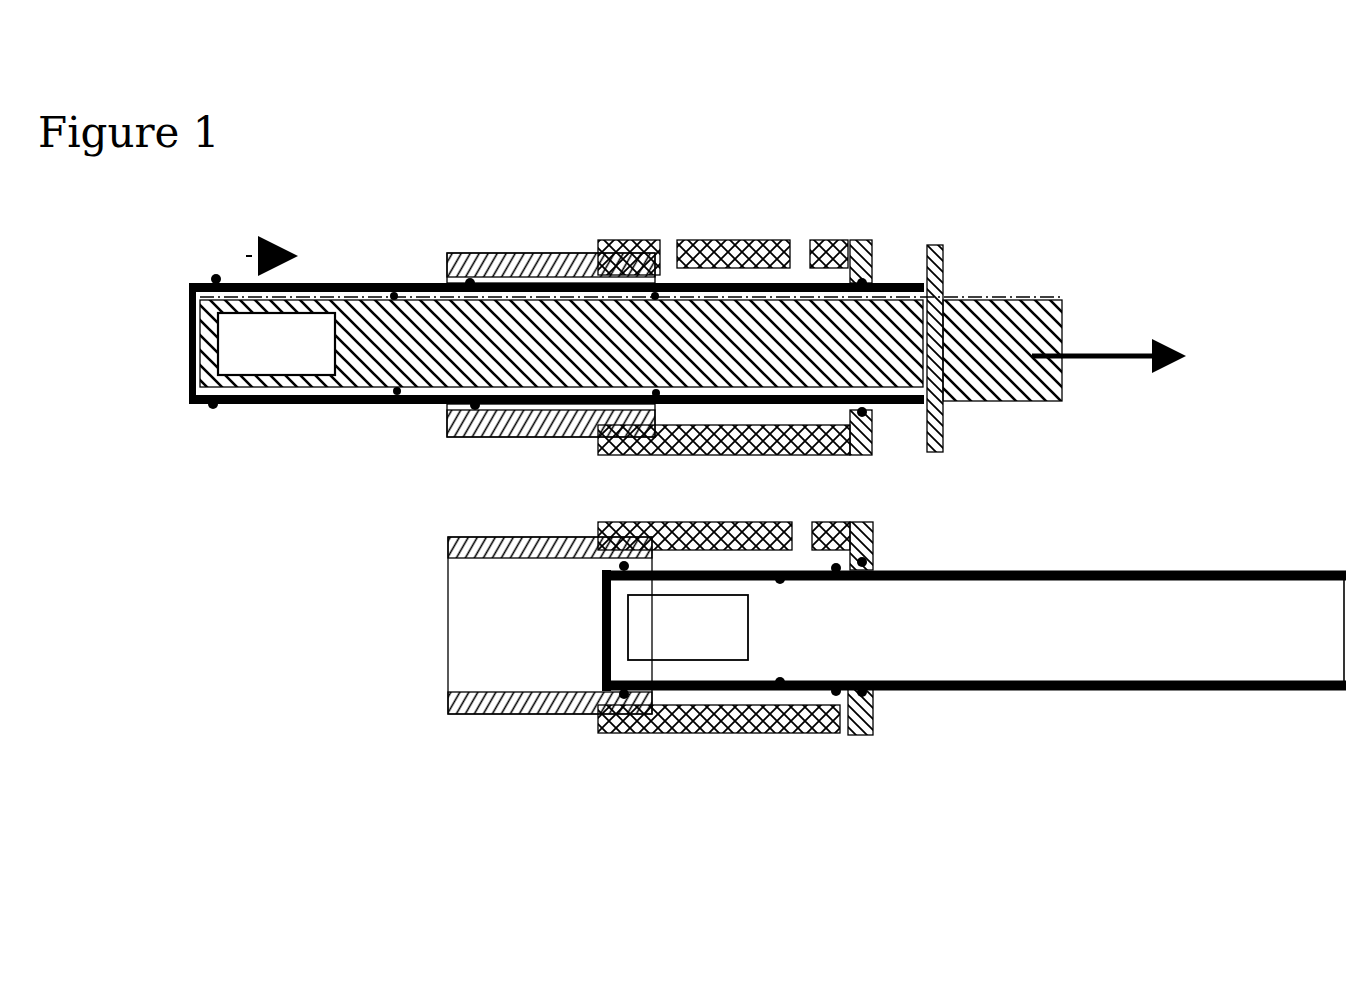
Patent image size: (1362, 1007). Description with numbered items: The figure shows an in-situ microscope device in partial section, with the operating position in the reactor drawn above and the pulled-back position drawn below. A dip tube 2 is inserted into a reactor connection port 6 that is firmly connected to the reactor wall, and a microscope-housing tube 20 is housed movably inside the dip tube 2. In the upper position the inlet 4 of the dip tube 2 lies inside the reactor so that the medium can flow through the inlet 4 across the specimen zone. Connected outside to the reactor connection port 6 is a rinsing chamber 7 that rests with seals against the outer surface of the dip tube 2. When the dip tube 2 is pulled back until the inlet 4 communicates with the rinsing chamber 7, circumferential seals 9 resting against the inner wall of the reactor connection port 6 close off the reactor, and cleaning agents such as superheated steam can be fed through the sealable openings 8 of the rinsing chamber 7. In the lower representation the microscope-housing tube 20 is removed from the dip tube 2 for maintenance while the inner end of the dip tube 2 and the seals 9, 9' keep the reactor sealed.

The dip tube 2 is at (337, 275).
The inlet 4 is at (264, 355).
The reactor connection port 6 is at (537, 430).
The rinsing chamber 7 is at (726, 440).
The sealable openings 8 is at (787, 238).
The seals 9 is at (512, 519).
The seals 9' is at (645, 541).
The microscope-housing tube 20 is at (369, 372).